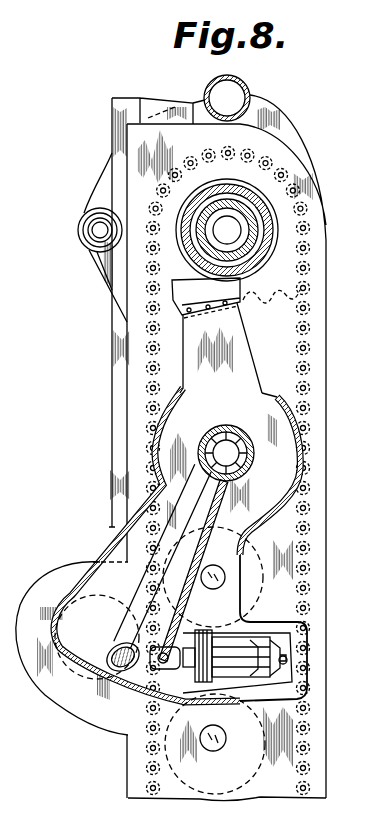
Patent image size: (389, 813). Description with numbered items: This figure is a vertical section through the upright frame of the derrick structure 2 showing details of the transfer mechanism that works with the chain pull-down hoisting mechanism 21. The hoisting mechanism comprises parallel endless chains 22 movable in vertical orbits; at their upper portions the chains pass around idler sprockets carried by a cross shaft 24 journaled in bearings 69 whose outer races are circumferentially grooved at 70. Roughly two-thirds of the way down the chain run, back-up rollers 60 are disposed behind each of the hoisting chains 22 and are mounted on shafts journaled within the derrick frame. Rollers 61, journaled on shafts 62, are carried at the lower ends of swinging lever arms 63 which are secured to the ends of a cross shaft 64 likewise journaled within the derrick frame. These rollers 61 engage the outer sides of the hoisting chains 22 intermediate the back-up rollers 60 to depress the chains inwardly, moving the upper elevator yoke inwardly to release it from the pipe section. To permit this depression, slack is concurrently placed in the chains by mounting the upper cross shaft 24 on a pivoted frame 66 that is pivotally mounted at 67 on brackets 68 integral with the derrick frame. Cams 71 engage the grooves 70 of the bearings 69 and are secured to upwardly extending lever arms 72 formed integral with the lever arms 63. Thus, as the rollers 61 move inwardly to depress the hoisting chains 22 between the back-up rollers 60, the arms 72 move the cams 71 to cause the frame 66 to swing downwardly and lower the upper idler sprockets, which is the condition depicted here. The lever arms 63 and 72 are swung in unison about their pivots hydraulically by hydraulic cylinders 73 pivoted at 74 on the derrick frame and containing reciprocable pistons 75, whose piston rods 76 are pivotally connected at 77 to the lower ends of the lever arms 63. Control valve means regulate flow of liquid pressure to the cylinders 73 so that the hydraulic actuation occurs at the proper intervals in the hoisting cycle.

The derrick structure 2 is at (328, 371).
The hoisting mechanism 21 is at (143, 392).
The endless chains 22 is at (128, 352).
The cross shaft 24 is at (237, 222).
The back-up rollers 60 is at (262, 537).
The rollers 61 is at (65, 701).
The shafts 62 is at (113, 647).
The swinging lever arms 63 is at (138, 568).
The cross shaft 64 is at (229, 432).
The pivoted frame 66 is at (278, 128).
The pivot 67 is at (102, 231).
The brackets 68 is at (113, 270).
The bearings 69 is at (256, 212).
The circumferential grooves 70 is at (272, 236).
The cams 71 is at (173, 283).
The lever arms 72 is at (240, 374).
The hydraulic cylinders 73 is at (236, 642).
The pivot 74 is at (286, 661).
The pistons 75 is at (283, 655).
The piston rods 76 is at (160, 663).
The pivotal connection 77 is at (150, 673).